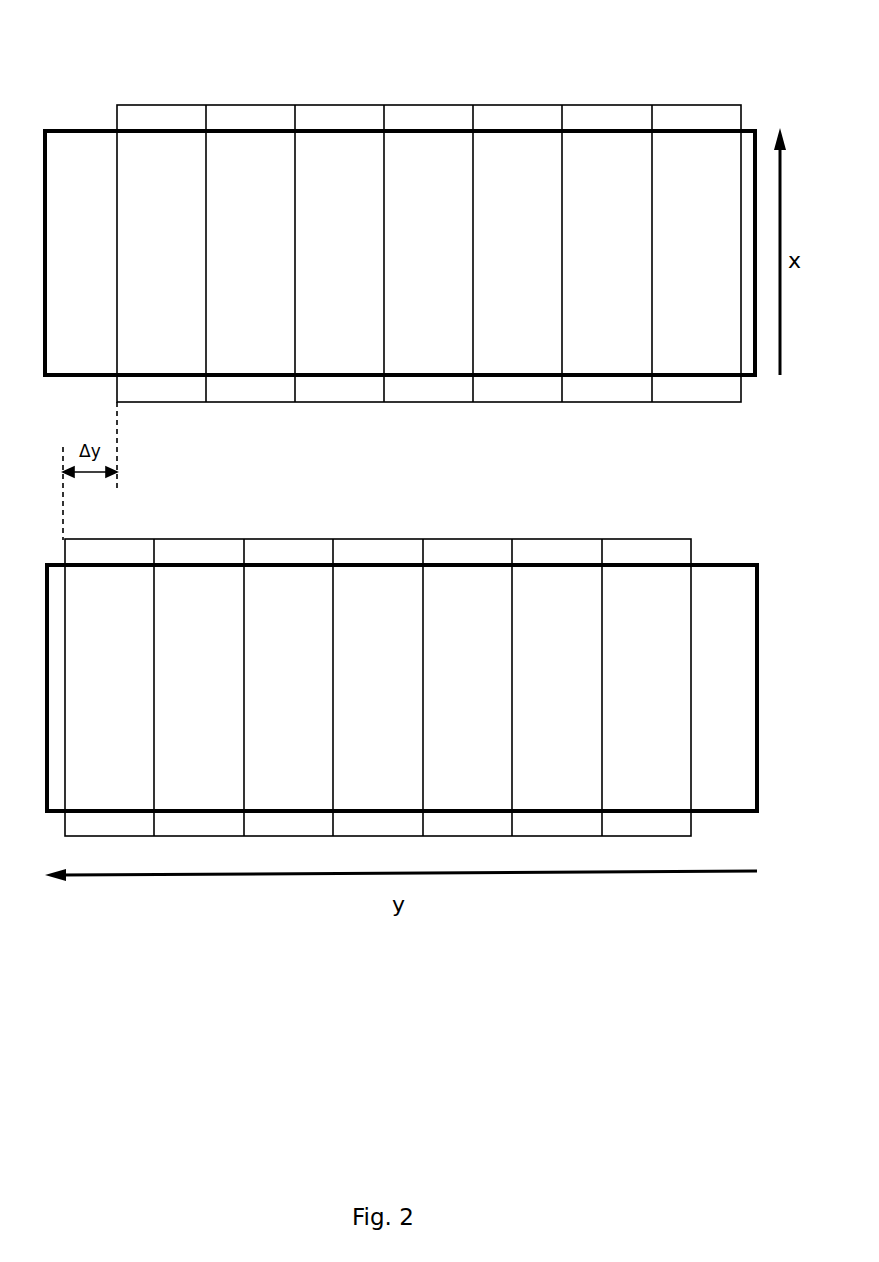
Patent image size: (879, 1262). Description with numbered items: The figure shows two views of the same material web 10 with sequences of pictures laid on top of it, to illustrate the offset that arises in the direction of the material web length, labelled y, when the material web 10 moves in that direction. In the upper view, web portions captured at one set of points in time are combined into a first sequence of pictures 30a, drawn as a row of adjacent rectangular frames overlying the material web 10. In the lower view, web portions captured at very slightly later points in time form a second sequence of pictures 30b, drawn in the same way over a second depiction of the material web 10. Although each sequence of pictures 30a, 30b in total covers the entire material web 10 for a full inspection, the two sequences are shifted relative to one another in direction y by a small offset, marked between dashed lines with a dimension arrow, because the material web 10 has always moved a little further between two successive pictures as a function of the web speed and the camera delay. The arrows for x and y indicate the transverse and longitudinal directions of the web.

The material web 10 is at (58, 146).
The sequence of pictures 30a is at (156, 116).
The sequence of pictures 30b is at (140, 554).